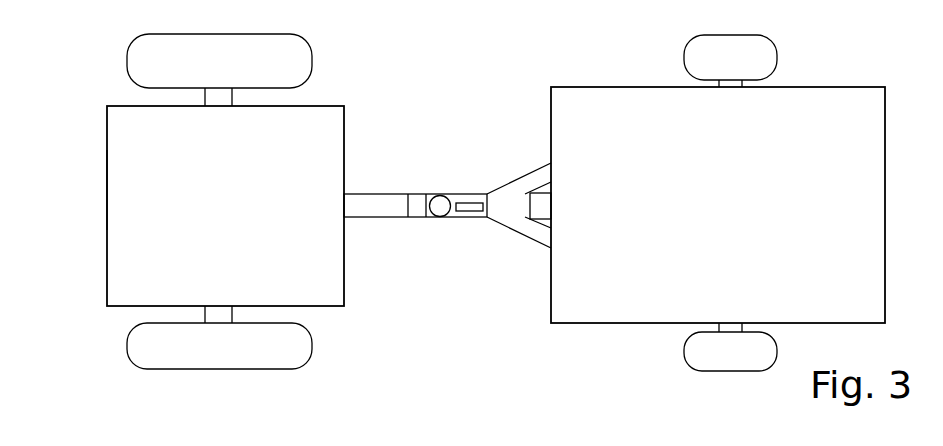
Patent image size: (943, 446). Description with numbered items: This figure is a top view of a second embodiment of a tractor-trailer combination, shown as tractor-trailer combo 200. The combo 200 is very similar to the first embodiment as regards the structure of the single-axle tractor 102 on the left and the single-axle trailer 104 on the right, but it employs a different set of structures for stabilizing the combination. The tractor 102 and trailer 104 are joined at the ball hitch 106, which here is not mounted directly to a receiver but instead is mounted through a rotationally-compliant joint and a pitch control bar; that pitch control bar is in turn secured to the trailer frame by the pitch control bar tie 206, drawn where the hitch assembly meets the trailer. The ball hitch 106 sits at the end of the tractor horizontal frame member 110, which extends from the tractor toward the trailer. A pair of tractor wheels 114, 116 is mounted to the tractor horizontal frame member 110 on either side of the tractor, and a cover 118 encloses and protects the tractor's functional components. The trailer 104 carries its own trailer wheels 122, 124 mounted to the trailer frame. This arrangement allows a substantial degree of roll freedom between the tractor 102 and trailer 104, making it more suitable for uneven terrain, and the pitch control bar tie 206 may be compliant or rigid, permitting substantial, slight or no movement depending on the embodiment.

The tractor-trailer combo 200 is at (430, 35).
The single-axle tractor 102 is at (250, 219).
The single-axle trailer 104 is at (743, 220).
The ball hitch 106 is at (440, 195).
The tractor horizontal frame member 110 is at (402, 153).
The tractor wheel 114 is at (128, 350).
The tractor wheel 116 is at (128, 50).
The cover 118 is at (107, 190).
The trailer wheel 122 is at (690, 358).
The trailer wheel 124 is at (718, 42).
The pitch control bar tie 206 is at (530, 192).